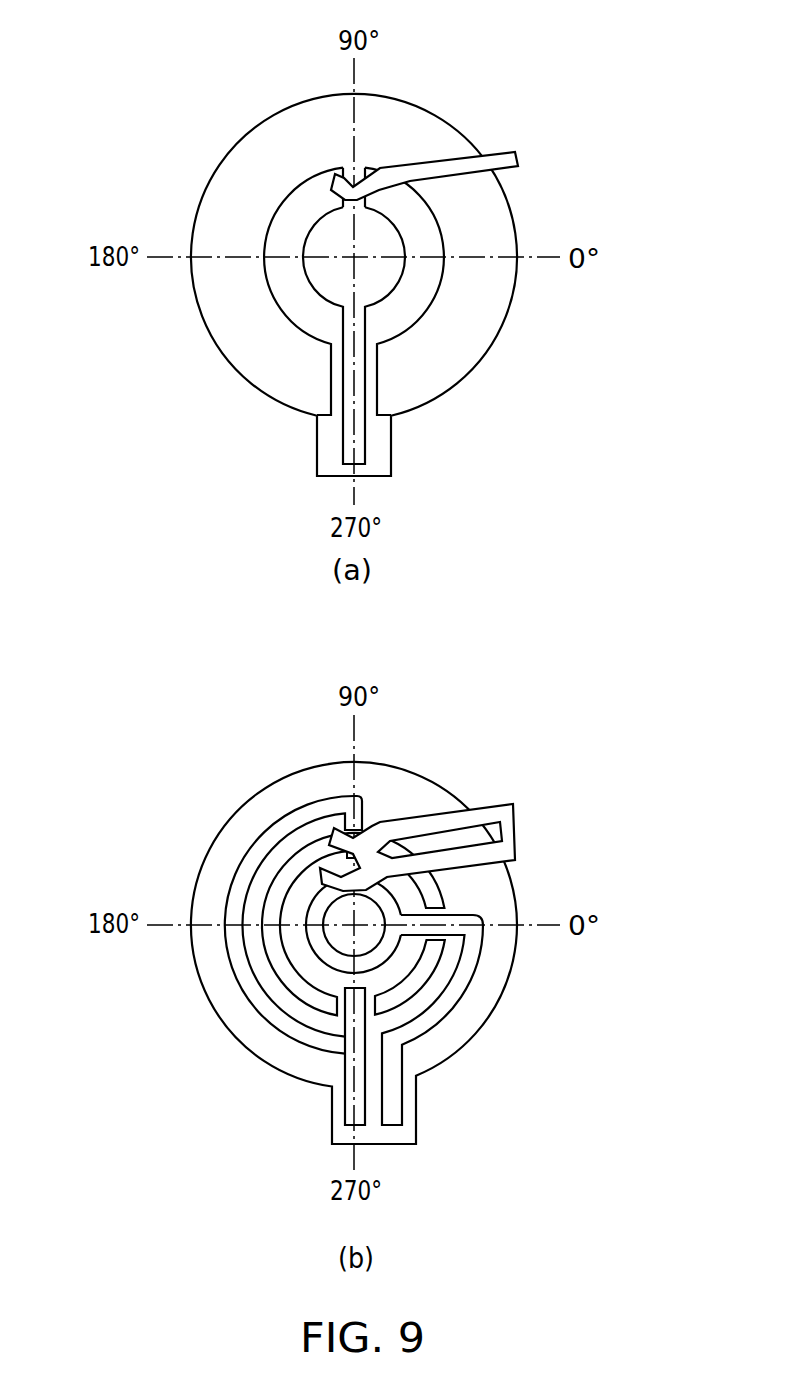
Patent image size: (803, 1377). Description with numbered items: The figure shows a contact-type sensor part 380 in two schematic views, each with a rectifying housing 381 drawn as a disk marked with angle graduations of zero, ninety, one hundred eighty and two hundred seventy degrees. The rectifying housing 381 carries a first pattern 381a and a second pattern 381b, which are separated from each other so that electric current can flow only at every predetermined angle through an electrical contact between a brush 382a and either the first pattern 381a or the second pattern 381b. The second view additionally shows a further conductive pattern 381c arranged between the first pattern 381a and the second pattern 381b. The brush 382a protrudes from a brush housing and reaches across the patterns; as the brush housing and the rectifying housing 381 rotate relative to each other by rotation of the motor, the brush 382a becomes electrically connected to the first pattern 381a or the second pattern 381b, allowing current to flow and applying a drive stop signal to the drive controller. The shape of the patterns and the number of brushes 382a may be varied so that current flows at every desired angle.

The sensor part 380 is at (582, 88).
The rectifying housing 381 is at (530, 205).
The first pattern 381a is at (427, 303).
The second pattern 381b is at (285, 301).
The third conductive pattern 381c is at (410, 983).
The brush 382a is at (501, 157).